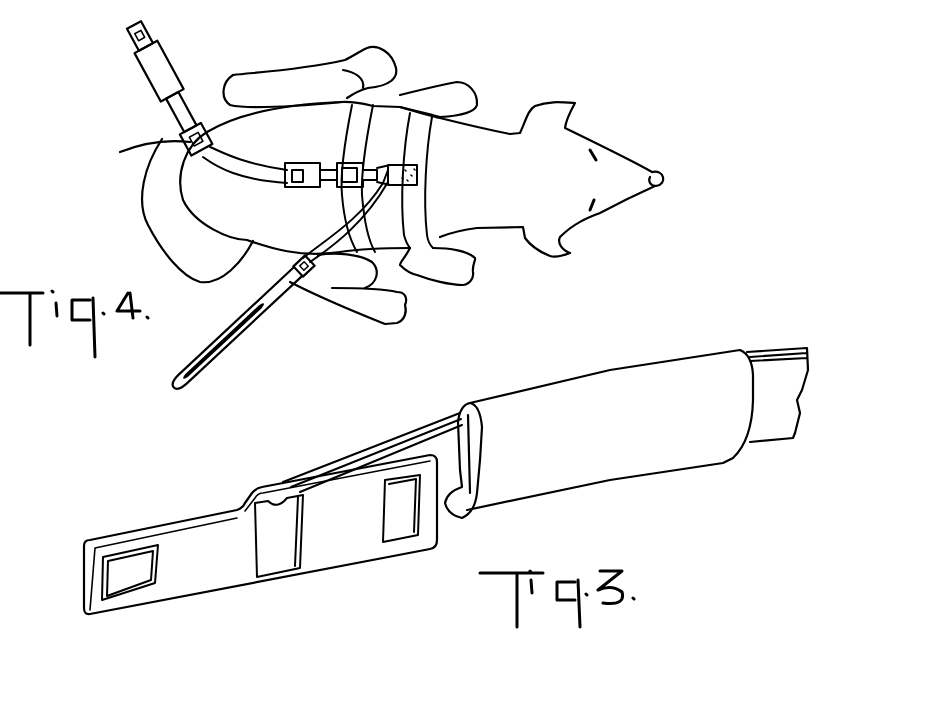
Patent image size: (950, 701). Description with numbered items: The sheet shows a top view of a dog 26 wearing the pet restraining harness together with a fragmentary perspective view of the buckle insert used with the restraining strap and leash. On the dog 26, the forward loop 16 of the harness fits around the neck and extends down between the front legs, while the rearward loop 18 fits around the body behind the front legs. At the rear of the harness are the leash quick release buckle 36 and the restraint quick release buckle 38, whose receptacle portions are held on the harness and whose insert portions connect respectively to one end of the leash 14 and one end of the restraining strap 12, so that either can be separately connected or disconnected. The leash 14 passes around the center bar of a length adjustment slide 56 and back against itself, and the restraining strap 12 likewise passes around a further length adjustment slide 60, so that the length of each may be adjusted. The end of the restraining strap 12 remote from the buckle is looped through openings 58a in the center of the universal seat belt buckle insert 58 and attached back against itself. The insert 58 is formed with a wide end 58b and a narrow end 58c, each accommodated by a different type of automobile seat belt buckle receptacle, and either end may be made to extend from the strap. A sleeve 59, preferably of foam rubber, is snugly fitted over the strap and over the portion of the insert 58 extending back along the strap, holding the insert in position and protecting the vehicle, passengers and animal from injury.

In FIG. 4, the restraining strap 12 is at (240, 173).
In FIG. 5, the restraining strap 12 is at (380, 450).
In FIG. 4, the leash 14 is at (270, 303).
In FIG. 4, the forward loop 16 is at (427, 140).
In FIG. 4, the rearward loop 18 is at (383, 178).
In FIG. 4, the dog 26 is at (510, 243).
In FIG. 4, the leash quick release buckle 36 is at (381, 162).
In FIG. 4, the restraint quick release buckle 38 is at (303, 187).
In FIG. 4, the length adjustment slide 56 is at (300, 253).
In FIG. 4, the universal seat belt buckle insert 58 is at (128, 33).
In FIG. 5, the universal seat belt buckle insert 58 is at (283, 524).
In FIG. 5, the openings 58a is at (262, 578).
In FIG. 5, the wide end 58b is at (363, 557).
In FIG. 5, the narrow end 58c is at (127, 597).
In FIG. 4, the sleeve 59 is at (170, 63).
In FIG. 5, the sleeve 59 is at (642, 474).
In FIG. 4, the length adjustment slide 60 is at (183, 145).